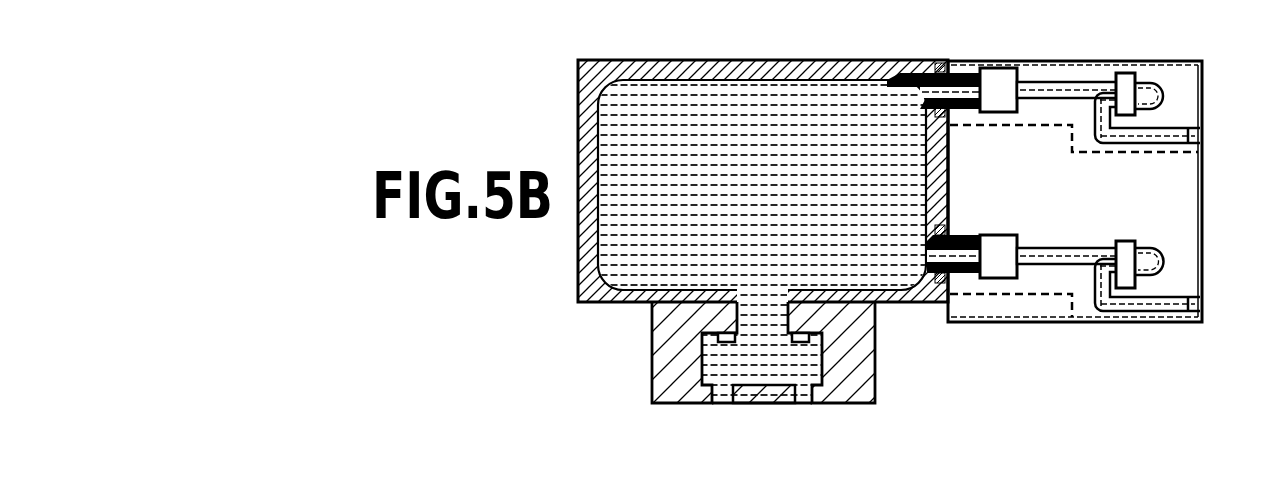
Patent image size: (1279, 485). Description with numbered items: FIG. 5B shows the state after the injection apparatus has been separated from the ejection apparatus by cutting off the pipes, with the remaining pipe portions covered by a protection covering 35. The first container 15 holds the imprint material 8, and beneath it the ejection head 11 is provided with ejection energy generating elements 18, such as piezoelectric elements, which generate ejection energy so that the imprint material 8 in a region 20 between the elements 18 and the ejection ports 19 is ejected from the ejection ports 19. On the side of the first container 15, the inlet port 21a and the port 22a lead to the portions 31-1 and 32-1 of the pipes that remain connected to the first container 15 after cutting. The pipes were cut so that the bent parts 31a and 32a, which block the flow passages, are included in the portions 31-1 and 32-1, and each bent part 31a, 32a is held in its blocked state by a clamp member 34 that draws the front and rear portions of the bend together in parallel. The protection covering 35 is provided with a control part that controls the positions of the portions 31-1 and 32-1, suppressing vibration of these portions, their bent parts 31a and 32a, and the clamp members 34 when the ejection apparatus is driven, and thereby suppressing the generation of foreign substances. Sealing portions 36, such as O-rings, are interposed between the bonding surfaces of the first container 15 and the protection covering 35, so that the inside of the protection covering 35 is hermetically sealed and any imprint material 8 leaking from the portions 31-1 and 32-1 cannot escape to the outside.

The imprint material 8 is at (739, 116).
The ejection head 11 is at (650, 342).
The first container 15 is at (652, 61).
The ejection energy generating element 18 is at (794, 337).
The ejection port 19 is at (801, 410).
The region 20 is at (805, 371).
The inlet port 21a is at (997, 235).
The second connector port 22a is at (997, 68).
The first portion of pipe 31-1 is at (1066, 248).
The bent part 31a is at (1164, 258).
The first portion of pipe 32-1 is at (1066, 82).
The bent part 32a is at (1164, 93).
The clamp member 34 is at (1126, 73).
The protection covering 35 is at (1204, 190).
The sealing portion 36 is at (938, 60).